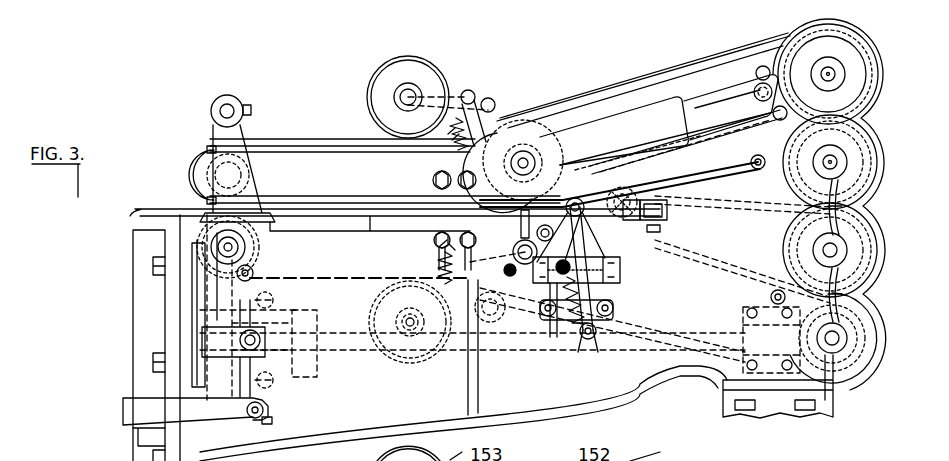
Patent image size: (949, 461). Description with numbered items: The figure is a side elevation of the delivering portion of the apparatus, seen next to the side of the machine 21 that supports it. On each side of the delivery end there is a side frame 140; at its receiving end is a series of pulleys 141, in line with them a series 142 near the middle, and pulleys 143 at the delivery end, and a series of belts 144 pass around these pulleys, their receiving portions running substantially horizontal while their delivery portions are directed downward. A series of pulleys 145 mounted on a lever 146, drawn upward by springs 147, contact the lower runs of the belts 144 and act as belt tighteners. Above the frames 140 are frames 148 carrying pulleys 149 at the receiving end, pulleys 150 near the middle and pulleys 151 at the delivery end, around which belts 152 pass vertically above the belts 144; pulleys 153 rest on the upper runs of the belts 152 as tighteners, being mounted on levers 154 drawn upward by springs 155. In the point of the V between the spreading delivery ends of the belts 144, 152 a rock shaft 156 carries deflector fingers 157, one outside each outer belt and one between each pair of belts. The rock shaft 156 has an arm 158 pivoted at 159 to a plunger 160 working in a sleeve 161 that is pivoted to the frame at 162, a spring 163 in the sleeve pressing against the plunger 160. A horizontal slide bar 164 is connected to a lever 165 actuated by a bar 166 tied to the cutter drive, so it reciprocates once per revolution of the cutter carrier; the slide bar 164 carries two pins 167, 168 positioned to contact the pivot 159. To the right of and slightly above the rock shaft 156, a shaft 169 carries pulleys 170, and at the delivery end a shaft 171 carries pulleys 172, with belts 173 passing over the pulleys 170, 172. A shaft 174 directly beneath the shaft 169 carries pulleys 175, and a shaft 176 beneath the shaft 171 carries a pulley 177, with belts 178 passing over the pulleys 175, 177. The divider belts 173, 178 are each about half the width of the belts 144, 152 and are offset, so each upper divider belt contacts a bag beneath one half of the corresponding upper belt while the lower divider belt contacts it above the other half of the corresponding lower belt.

The frame plate 21 is at (140, 298).
The side frame 140 is at (652, 382).
The pulleys 141 is at (262, 247).
The series of pulleys 142 is at (468, 312).
The pulleys 143 is at (853, 373).
The belts 144 is at (372, 218).
The pulleys 145 is at (421, 362).
The lever 146 is at (432, 302).
The springs 147 is at (432, 258).
The frames 148 is at (610, 123).
The pulleys 149 is at (203, 170).
The pulleys 150 is at (530, 127).
The pulleys 151 is at (793, 56).
The belts 152 is at (647, 80).
The pulleys 153 is at (441, 68).
The levers 154 is at (527, 103).
The springs 155 is at (438, 155).
The rock shaft 156 is at (610, 180).
The deflector fingers 157 is at (578, 166).
The arm 158 is at (610, 258).
The pivot 159 is at (573, 330).
The plunger 160 is at (620, 275).
The sleeve 161 is at (630, 322).
The pivot 162 is at (592, 338).
The spring 163 is at (574, 340).
The slide bar 164 is at (348, 273).
The lever 165 is at (273, 397).
The bar 166 is at (128, 428).
The pin 167 is at (590, 272).
The pin 168 is at (506, 314).
The shaft 169 is at (638, 186).
The pulleys 170 is at (650, 158).
The shaft 171 is at (834, 160).
The pulleys 172 is at (863, 163).
The belts 173 is at (874, 178).
The shaft 174 is at (662, 230).
The pulleys 175 is at (667, 255).
The shaft 176 is at (830, 250).
The pulley 177 is at (864, 263).
The belts 178 is at (874, 240).